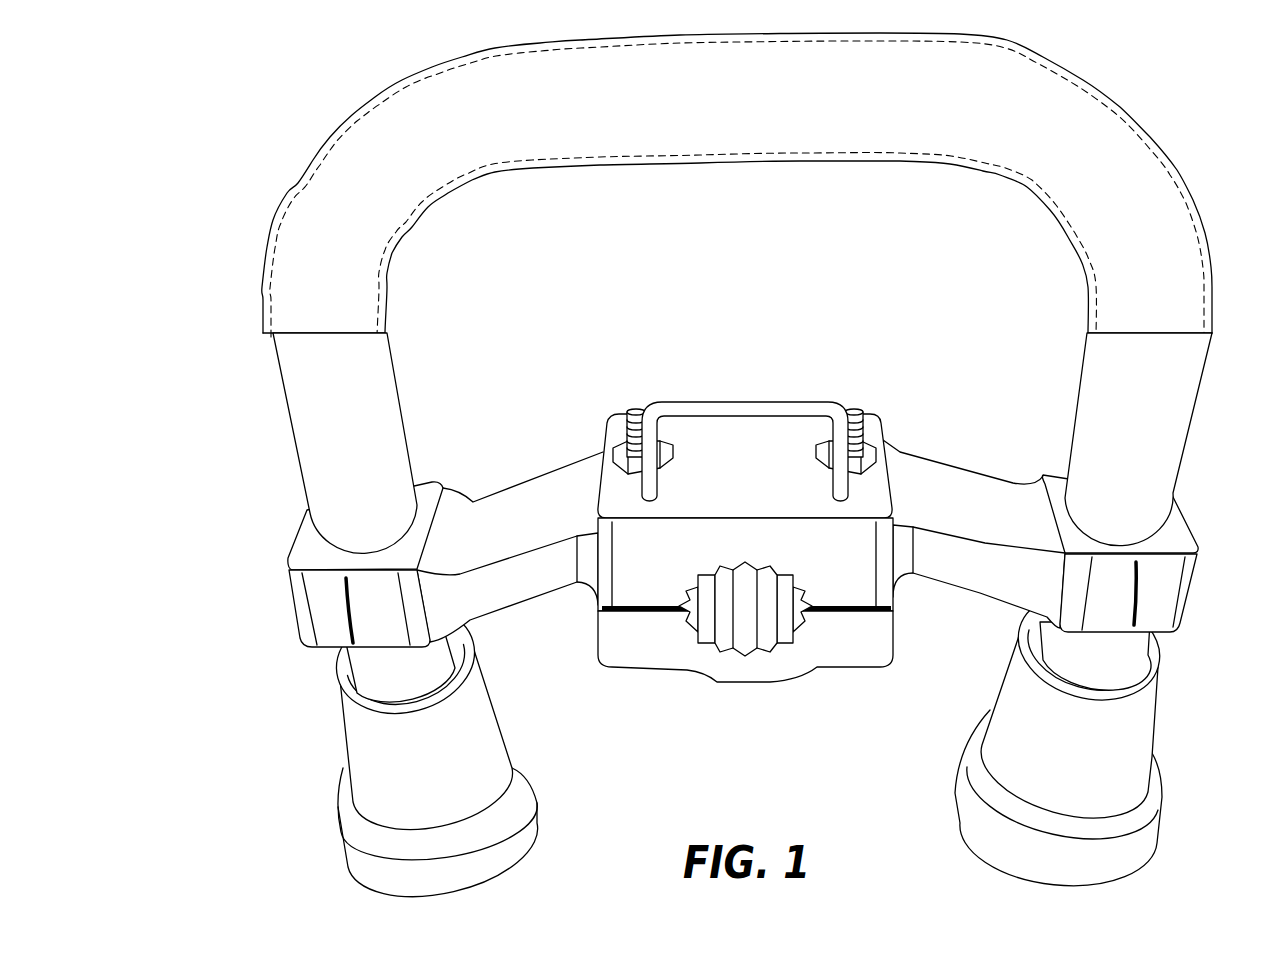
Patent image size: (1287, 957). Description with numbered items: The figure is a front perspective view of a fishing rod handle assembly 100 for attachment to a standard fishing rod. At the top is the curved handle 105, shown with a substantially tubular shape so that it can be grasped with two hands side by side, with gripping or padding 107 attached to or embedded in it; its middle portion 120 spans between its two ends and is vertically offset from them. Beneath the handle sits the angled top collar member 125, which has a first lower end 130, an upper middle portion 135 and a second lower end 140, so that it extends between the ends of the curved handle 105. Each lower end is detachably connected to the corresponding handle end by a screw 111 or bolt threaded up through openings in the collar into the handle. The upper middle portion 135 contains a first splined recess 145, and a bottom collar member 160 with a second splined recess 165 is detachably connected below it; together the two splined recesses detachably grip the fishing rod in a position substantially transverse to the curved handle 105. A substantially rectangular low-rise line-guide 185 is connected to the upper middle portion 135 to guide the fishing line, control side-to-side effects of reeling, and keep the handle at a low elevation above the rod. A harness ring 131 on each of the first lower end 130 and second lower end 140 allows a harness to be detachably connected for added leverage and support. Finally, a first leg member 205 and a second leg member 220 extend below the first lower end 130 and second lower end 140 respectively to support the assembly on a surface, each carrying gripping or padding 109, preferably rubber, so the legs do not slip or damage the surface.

The fishing rod handle assembly 100 is at (686, 465).
The curved handle 105 is at (298, 187).
The gripping or padding 107 is at (1188, 187).
The gripping or padding 109 is at (377, 745).
The screw 111 is at (642, 410).
The middle portion 120 is at (745, 95).
The angled top collar member 125 is at (757, 491).
The first lower end 130 is at (330, 614).
The harness ring 131 is at (352, 597).
The upper middle portion 135 is at (720, 428).
The second lower end 140 is at (1165, 587).
The first splined recess 145 is at (745, 562).
The bottom collar member 160 is at (838, 653).
The second splined recess 165 is at (745, 657).
The substantially rectangular low-rise line-guide 185 is at (743, 402).
The first leg member 205 is at (377, 667).
The second leg member 220 is at (1137, 643).